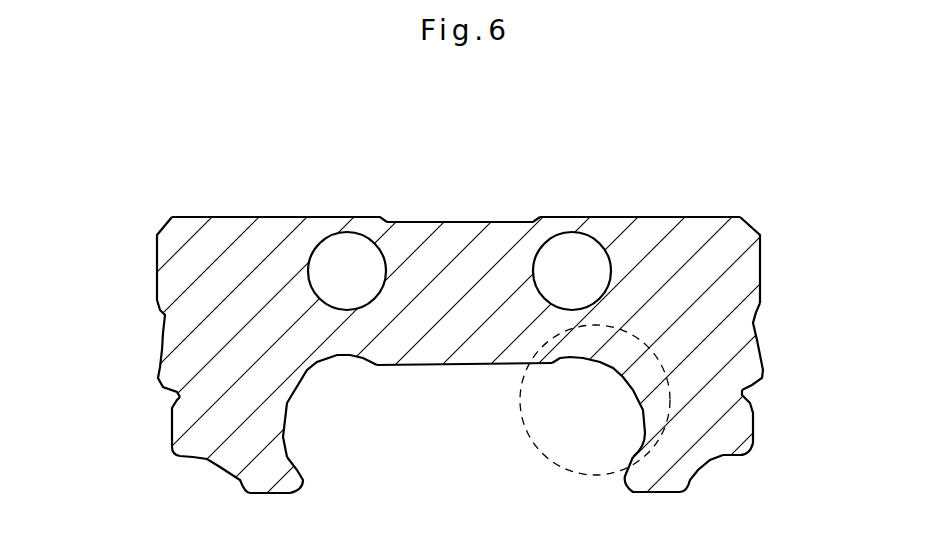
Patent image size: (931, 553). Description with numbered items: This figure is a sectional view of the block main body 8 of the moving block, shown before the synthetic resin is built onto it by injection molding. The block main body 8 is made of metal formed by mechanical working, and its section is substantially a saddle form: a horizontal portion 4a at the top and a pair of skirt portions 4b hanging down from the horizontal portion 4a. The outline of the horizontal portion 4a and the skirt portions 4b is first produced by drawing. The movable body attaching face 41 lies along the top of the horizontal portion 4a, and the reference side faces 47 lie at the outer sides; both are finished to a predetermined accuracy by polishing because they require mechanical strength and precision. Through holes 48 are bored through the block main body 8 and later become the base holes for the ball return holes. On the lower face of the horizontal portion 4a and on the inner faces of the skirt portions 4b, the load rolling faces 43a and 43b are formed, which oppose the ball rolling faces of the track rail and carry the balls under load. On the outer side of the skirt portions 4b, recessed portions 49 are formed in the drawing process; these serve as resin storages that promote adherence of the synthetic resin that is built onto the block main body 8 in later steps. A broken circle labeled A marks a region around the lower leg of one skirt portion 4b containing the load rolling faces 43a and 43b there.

The block main body 8 is at (716, 205).
The movable body attaching face 41 is at (207, 217).
The horizontal portion 4a is at (450, 243).
The through holes 48 is at (343, 242).
The reference side faces 47 is at (170, 252).
The skirt portions 4b is at (782, 330).
The recessed portions 49 is at (178, 400).
The load rolling faces 43a is at (287, 453).
The load rolling faces 43b is at (348, 358).
The region A is at (668, 445).